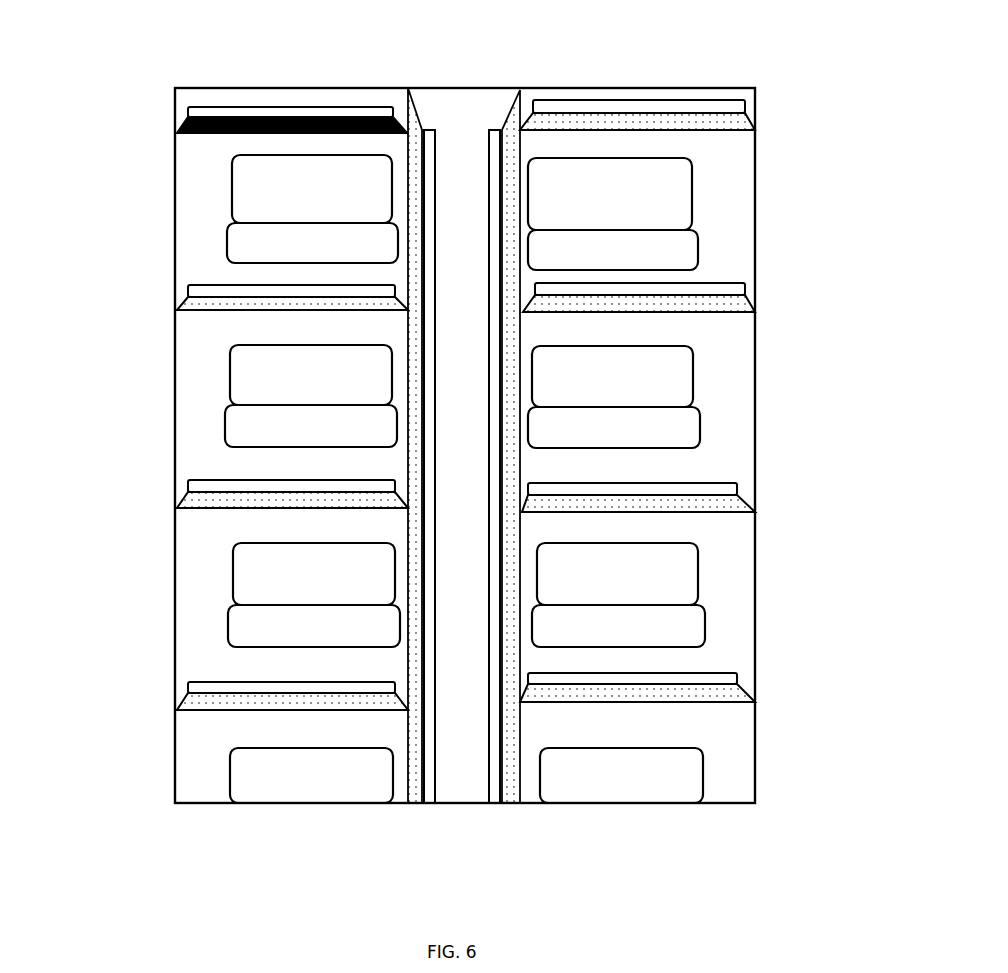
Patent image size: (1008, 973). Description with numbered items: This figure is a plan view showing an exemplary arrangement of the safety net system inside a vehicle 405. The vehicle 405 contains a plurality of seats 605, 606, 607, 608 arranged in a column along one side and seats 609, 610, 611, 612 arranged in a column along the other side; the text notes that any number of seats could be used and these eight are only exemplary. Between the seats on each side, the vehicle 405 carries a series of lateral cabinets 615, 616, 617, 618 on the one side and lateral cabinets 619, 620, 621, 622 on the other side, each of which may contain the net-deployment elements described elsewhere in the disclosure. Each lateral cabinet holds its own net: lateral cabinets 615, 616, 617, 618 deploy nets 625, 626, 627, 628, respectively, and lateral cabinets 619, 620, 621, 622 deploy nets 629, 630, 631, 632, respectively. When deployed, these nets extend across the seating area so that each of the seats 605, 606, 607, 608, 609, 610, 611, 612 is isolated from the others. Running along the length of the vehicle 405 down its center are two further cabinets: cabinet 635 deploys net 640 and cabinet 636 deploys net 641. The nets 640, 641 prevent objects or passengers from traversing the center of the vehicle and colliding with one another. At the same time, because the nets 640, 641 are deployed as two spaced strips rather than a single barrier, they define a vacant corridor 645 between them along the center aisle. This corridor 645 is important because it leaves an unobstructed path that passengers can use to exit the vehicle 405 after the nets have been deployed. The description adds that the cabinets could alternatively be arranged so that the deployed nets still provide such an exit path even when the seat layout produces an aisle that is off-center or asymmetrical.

The vehicle 405 is at (637, 88).
The seat 605 is at (232, 205).
The seat 606 is at (230, 388).
The seat 607 is at (233, 583).
The seat 608 is at (230, 778).
The seat 609 is at (685, 207).
The seat 610 is at (688, 391).
The seat 611 is at (690, 595).
The seat 612 is at (700, 770).
The lateral cabinet 615 is at (186, 111).
The lateral cabinet 616 is at (188, 290).
The lateral cabinet 617 is at (188, 487).
The lateral cabinet 618 is at (188, 686).
The lateral cabinet 619 is at (746, 104).
The lateral cabinet 620 is at (746, 289).
The lateral cabinet 621 is at (738, 489).
The lateral cabinet 622 is at (740, 679).
The net 625 is at (176, 130).
The net 626 is at (176, 303).
The net 627 is at (177, 502).
The net 628 is at (177, 700).
The net 629 is at (753, 121).
The net 630 is at (753, 304).
The net 631 is at (753, 504).
The net 632 is at (752, 697).
The cabinet 635 is at (428, 131).
The cabinet 636 is at (500, 131).
The net 640 is at (409, 115).
The net 641 is at (529, 125).
The vacant corridor 645 is at (452, 783).